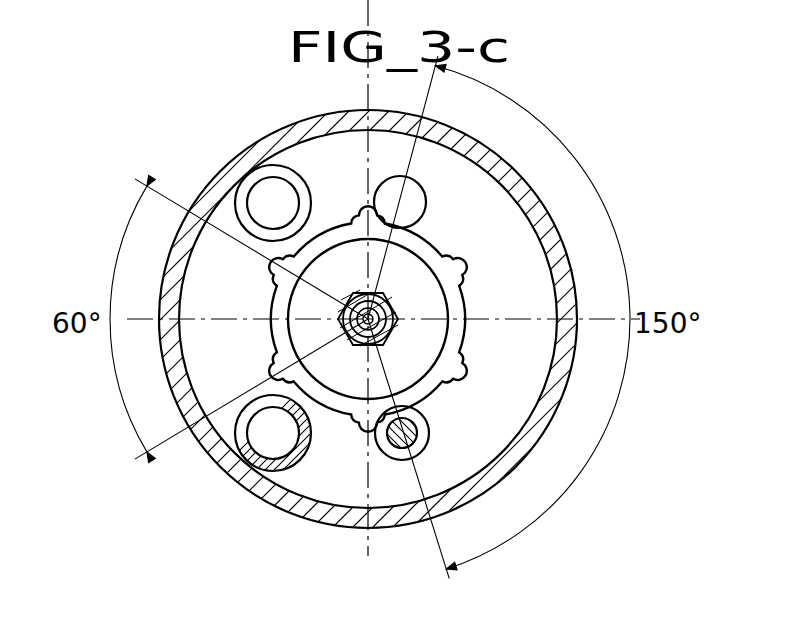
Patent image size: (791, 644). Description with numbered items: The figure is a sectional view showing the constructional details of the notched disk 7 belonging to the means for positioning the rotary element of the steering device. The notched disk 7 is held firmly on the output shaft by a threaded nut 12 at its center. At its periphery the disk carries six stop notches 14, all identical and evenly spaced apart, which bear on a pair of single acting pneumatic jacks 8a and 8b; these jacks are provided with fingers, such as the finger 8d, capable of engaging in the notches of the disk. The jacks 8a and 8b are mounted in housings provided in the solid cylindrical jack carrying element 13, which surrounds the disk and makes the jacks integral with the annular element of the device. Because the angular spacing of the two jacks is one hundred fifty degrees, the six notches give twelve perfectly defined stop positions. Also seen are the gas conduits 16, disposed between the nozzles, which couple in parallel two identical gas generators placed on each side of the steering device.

The cylindrical jack carrying element 13 is at (329, 118).
The gas conduits 16 is at (301, 191).
The single acting pneumatic jack 8a is at (419, 206).
The finger 8d is at (423, 427).
The single acting pneumatic jack 8b is at (418, 441).
The notched disk 7 is at (290, 302).
The stop notches 14 is at (281, 366).
The threaded nut 12 is at (392, 329).